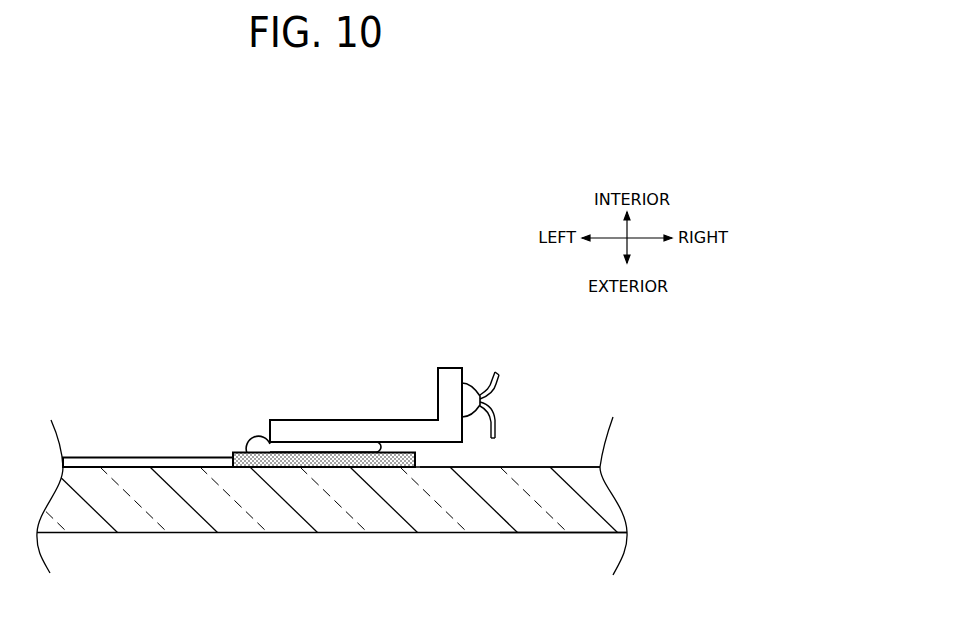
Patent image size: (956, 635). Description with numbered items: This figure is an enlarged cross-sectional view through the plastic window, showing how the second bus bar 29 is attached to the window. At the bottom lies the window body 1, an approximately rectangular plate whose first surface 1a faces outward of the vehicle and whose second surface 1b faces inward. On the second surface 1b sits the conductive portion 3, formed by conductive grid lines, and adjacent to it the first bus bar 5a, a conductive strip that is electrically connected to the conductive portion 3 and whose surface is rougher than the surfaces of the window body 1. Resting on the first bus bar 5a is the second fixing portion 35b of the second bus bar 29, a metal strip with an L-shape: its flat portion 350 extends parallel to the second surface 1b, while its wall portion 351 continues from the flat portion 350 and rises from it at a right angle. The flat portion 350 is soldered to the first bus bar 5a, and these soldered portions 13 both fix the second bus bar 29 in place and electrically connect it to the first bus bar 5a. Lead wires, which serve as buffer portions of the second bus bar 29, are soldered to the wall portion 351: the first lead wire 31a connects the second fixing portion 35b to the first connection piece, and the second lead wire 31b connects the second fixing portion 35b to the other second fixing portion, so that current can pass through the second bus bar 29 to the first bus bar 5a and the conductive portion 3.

The window body 1 is at (462, 515).
The first surface 1a is at (567, 532).
The second surface 1b is at (568, 467).
The conductive portion 3 is at (155, 458).
The first bus bar 5a is at (247, 452).
The soldered portion 13 is at (263, 440).
The second bus bar 29 is at (488, 351).
The first lead wire 31a is at (502, 417).
The second lead wire 31b is at (503, 378).
The second fixing portion 35b is at (375, 414).
The flat portion 350 is at (305, 432).
The wall portion 351 is at (450, 380).